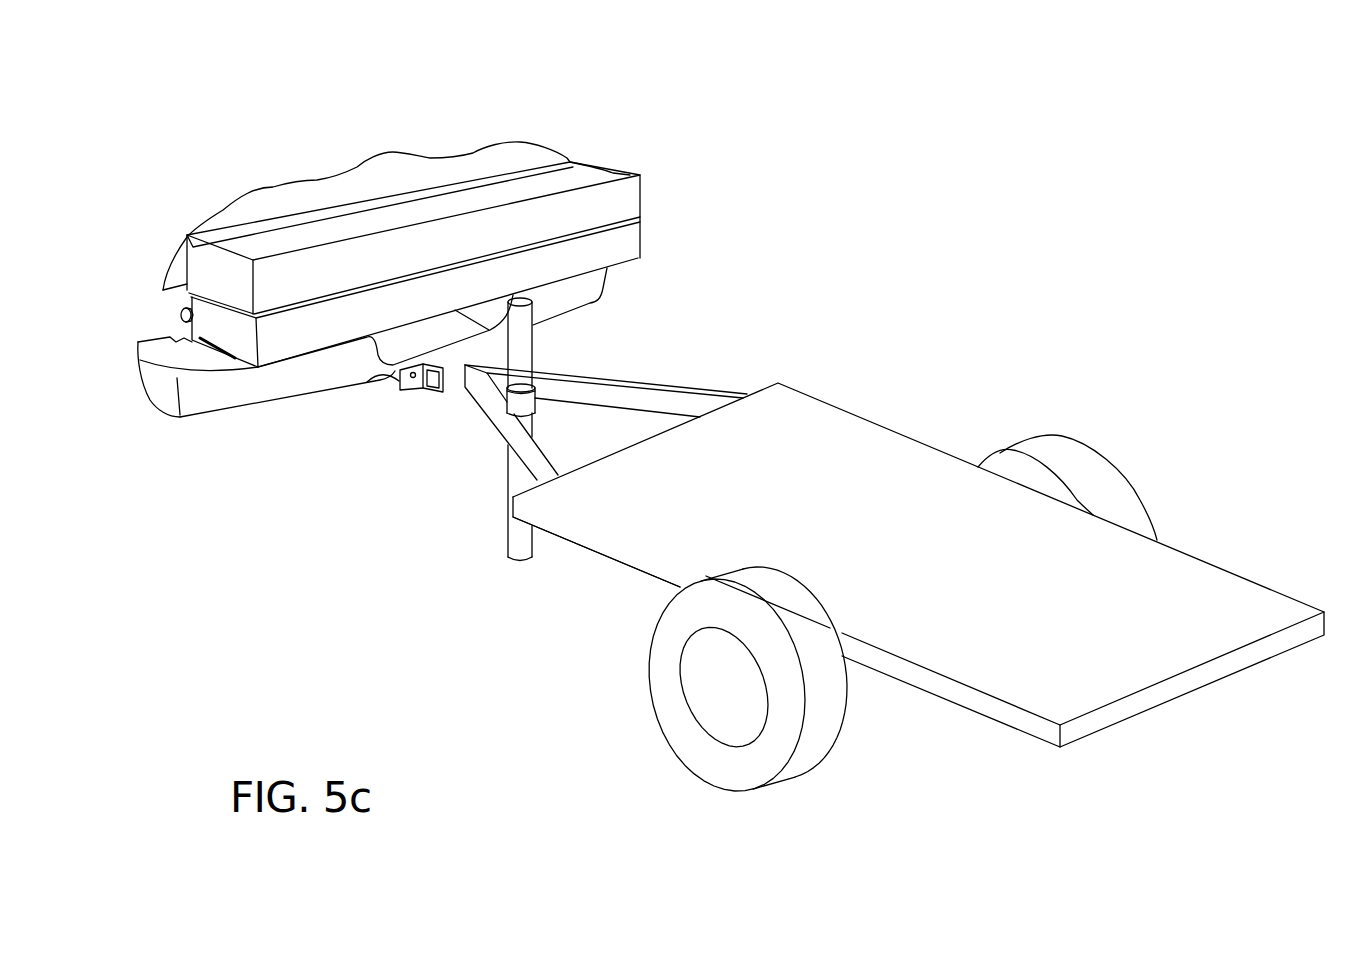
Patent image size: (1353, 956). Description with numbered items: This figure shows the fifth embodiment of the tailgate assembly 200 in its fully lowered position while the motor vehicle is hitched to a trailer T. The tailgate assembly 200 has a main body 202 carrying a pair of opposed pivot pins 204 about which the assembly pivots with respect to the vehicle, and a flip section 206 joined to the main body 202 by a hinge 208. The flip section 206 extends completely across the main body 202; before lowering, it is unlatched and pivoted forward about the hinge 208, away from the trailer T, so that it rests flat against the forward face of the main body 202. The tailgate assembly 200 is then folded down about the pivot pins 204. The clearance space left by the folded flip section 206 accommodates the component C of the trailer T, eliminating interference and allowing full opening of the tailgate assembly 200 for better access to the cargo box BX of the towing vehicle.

The tailgate assembly 200 is at (365, 153).
The cargo box BX is at (277, 201).
The flip section 206 is at (537, 187).
The hinge 208 is at (583, 228).
The pivot pins 204 is at (181, 314).
The main body 202 is at (305, 332).
The component C is at (523, 355).
The trailer T is at (885, 480).